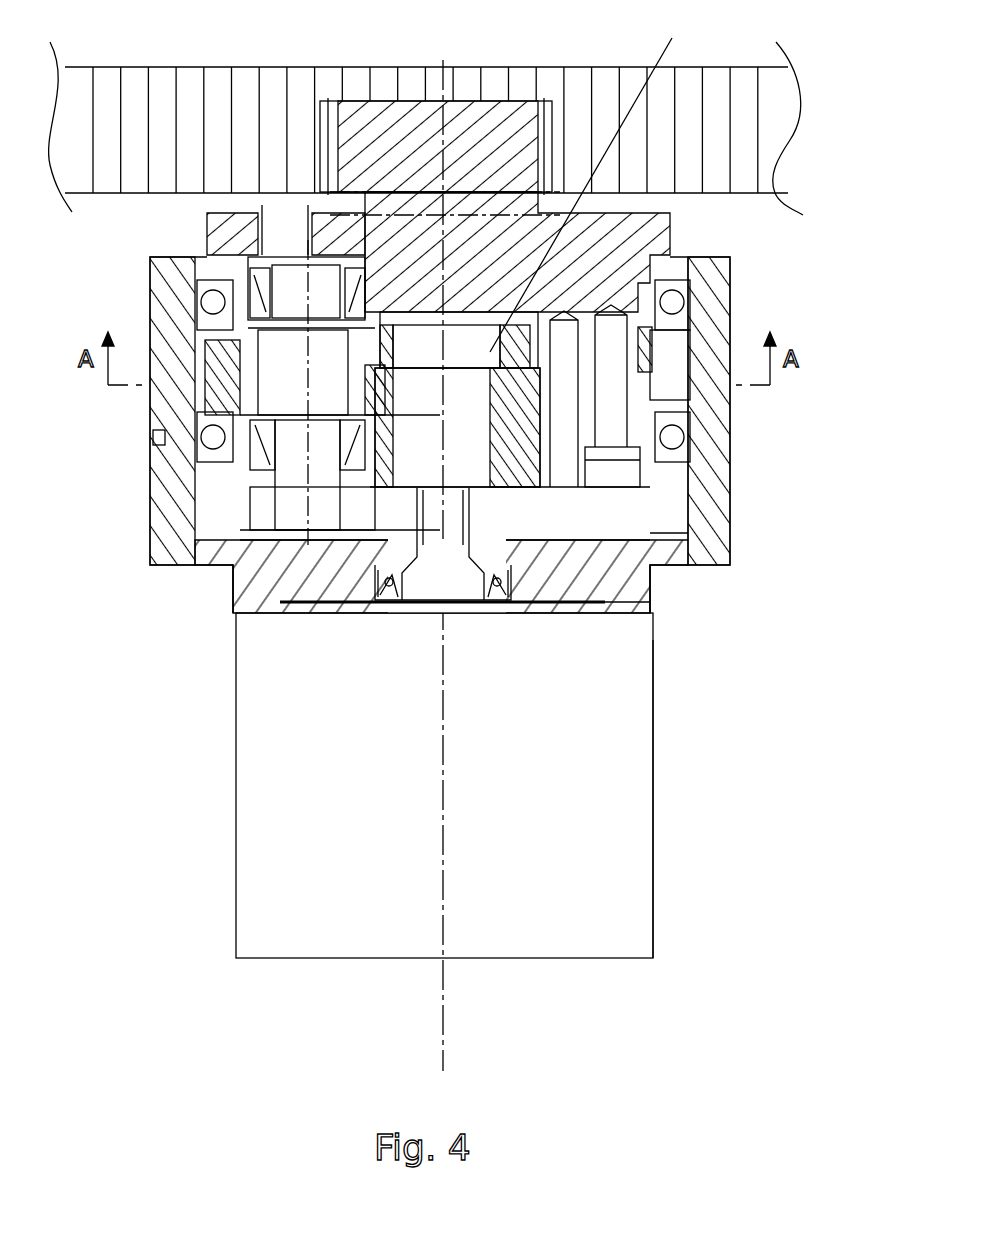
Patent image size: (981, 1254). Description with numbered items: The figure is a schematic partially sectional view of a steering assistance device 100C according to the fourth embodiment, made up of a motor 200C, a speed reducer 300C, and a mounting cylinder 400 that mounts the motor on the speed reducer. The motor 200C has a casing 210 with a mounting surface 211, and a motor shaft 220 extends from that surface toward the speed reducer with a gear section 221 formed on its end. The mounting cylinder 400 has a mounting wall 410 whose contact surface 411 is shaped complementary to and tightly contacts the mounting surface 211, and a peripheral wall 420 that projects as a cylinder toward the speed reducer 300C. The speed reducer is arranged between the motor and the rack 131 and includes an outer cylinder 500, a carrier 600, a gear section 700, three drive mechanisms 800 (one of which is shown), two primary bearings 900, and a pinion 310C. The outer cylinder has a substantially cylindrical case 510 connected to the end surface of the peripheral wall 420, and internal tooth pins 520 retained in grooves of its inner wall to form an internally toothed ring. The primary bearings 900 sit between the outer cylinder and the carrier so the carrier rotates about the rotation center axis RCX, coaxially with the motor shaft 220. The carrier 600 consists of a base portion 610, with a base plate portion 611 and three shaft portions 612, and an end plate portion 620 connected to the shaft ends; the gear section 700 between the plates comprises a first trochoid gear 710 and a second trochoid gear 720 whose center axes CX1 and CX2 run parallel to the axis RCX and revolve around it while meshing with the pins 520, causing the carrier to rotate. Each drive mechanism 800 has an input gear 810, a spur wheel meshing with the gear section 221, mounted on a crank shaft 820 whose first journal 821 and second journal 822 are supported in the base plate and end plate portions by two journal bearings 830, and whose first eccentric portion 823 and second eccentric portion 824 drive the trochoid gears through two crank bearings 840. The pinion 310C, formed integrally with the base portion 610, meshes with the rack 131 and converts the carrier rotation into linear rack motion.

The steering assistance device 100C is at (730, 930).
The rack 131 is at (553, 67).
The motor 200C is at (236, 930).
The casing 210 is at (653, 748).
The mounting surface 211 is at (640, 600).
The motor shaft 220 is at (463, 582).
The gear section 221 is at (528, 565).
The speed reducer 300C is at (133, 270).
The pinion 310C is at (385, 98).
The mounting cylinder 400 is at (140, 555).
The mounting wall 410 is at (640, 580).
The contact surface 411 is at (245, 645).
The peripheral wall 420 is at (730, 478).
The outer cylinder 500 is at (730, 262).
The case 510 is at (730, 325).
The internal tooth pins 520 is at (210, 360).
The carrier 600 is at (688, 505).
The base portion 610 is at (672, 238).
The base plate portion 611 is at (207, 238).
The shaft portions 612 is at (675, 388).
The end plate portion 620 is at (560, 532).
The gear section 700 is at (240, 470).
The first trochoid gear 710 is at (250, 345).
The second trochoid gear 720 is at (160, 428).
The drive mechanisms 800 is at (235, 528).
The input gear 810 is at (368, 595).
The crank shaft 820 is at (300, 525).
The first journal 821 is at (290, 282).
The second journal 822 is at (320, 510).
The first eccentric portion 823 is at (332, 330).
The second eccentric portion 824 is at (460, 350).
The journal bearings 830 is at (210, 285).
The crank bearings 840 is at (248, 300).
The primary bearings 900 is at (688, 282).
The center axis of the first trochoid gear CX1 is at (592, 181).
The center axis of the second trochoid gear CX2 is at (298, 497).
The rotation center axis RCX is at (445, 1050).